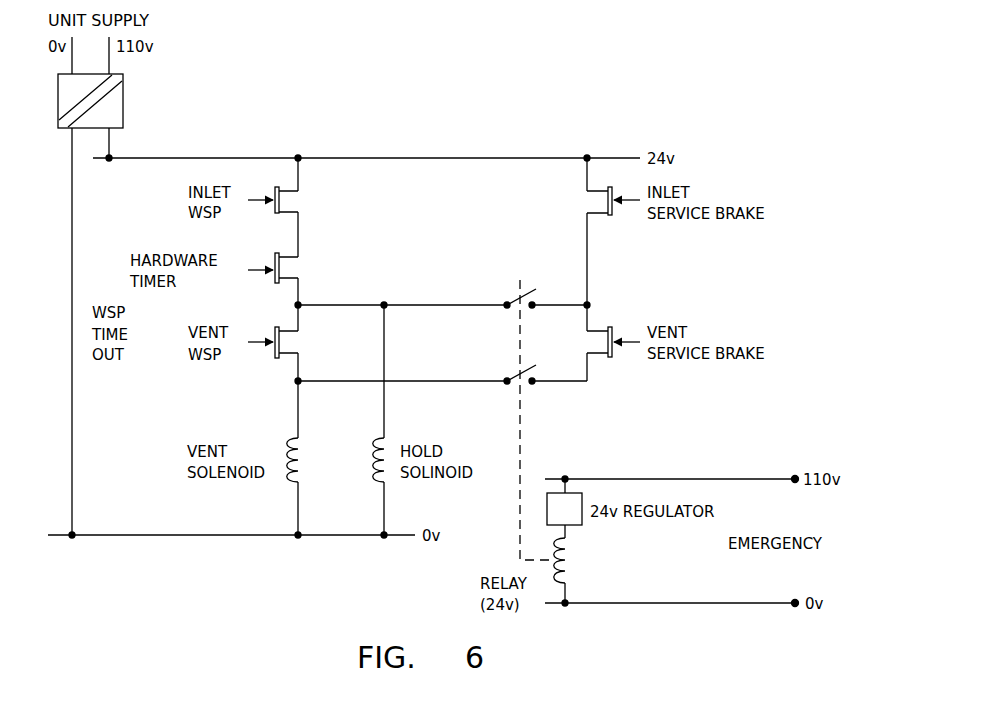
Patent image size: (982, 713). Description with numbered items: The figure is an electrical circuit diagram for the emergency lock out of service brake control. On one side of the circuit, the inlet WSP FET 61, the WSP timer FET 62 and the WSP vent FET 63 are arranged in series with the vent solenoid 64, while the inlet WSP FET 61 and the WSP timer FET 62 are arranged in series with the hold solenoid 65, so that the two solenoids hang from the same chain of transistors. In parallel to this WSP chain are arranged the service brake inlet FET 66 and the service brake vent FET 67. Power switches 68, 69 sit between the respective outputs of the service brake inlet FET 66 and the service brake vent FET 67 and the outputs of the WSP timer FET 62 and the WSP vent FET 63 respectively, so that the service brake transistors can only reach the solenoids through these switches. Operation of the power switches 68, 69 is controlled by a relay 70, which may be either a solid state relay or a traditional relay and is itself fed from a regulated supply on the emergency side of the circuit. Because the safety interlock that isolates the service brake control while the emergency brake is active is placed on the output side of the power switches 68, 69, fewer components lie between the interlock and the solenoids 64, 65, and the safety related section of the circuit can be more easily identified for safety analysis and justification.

The inlet WSP FET 61 is at (291, 204).
The WSP timer FET 62 is at (291, 271).
The WSP vent FET 63 is at (291, 344).
The vent solenoid 64 is at (306, 452).
The hold solenoid 65 is at (376, 460).
The service brake inlet FET 66 is at (600, 205).
The service brake vent FET 67 is at (600, 345).
The power switch 68 is at (521, 300).
The power switch 69 is at (523, 385).
The relay 70 is at (574, 566).